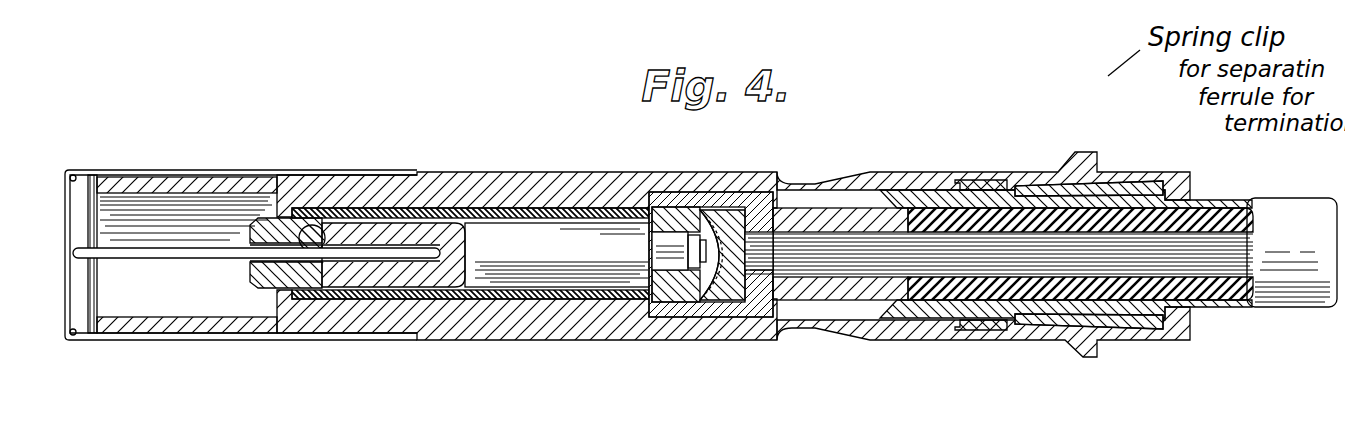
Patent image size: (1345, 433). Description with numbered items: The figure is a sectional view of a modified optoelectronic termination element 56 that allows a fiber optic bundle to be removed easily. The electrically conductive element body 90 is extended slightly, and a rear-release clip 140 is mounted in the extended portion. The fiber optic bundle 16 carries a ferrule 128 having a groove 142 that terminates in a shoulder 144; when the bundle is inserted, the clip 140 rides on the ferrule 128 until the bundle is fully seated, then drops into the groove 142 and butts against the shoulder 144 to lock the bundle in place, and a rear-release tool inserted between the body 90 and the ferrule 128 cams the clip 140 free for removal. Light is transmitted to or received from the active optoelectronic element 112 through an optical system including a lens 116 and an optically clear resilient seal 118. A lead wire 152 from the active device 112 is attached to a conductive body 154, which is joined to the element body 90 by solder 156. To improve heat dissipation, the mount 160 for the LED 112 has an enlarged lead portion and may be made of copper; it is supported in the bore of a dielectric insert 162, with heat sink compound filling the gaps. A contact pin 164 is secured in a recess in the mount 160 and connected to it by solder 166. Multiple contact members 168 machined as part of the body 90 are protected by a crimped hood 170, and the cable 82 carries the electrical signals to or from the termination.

The optical fiber cable 16 is at (838, 243).
The optoelectronic termination element 56 is at (551, 160).
The cable 82 is at (1290, 294).
The element body 90 is at (467, 180).
The active optoelectronic element 112 is at (700, 270).
The lens 116 is at (727, 226).
The optically clear resilient seal 118 is at (723, 288).
The ferrule 128 is at (924, 195).
The rear-release clip 140 is at (1047, 193).
The groove 142 is at (1133, 202).
The shoulder 144 is at (1030, 188).
The lead wire 152 is at (690, 204).
The conductive body 154 is at (658, 193).
The solder 156 is at (785, 192).
The mount 160 is at (525, 257).
The dielectric insert 162 is at (443, 297).
The contact pin 164 is at (180, 259).
The solder 166 is at (317, 268).
The contact members 168 is at (183, 187).
The hood 170 is at (95, 309).